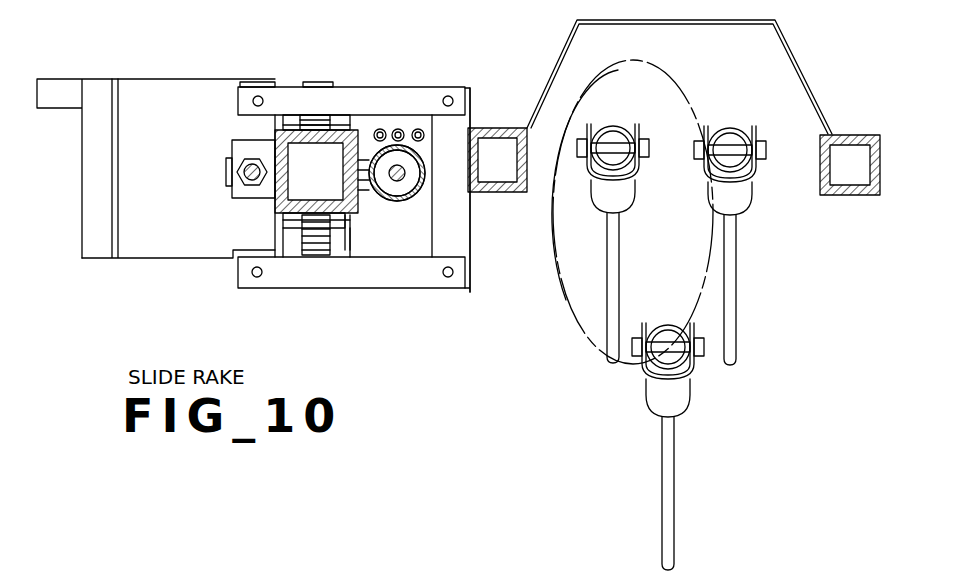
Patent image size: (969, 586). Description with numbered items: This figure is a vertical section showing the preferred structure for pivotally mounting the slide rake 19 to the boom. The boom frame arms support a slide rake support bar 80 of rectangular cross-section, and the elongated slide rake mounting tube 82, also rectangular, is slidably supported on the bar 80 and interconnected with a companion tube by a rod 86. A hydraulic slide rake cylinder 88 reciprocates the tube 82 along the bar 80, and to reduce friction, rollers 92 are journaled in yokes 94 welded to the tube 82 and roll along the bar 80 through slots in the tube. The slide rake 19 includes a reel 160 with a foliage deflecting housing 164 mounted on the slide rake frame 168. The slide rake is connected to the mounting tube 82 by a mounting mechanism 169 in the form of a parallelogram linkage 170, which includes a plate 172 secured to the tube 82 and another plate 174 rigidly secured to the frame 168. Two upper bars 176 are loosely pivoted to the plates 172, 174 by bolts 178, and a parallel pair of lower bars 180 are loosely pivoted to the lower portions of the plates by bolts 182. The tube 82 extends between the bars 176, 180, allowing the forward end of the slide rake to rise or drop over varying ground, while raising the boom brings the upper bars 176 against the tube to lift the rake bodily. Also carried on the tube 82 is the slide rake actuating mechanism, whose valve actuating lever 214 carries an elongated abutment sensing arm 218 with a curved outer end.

The slide rake 19 is at (843, 132).
The slide rake support bar 80 is at (316, 179).
The elongated slide rake mounting tube 82 is at (357, 214).
The rod 86 is at (237, 172).
The hydraulic slide rake cylinder 88 is at (420, 195).
The rollers 92 is at (316, 82).
The yokes 94 is at (283, 121).
The reel 160 is at (756, 372).
The foliage deflecting housing 164 is at (556, 58).
The slide rake frame 168 is at (528, 192).
The mounting mechanism 169 is at (381, 84).
The parallelogram linkage 170 is at (412, 290).
The plate 172 is at (243, 250).
The plate 174 is at (458, 232).
The upper bars 176 is at (284, 84).
The bolts 178 is at (258, 95).
The lower bars 180 is at (302, 288).
The bolts 182 is at (260, 278).
The valve actuating lever 214 is at (90, 249).
The abutment sensing arm 218 is at (62, 70).